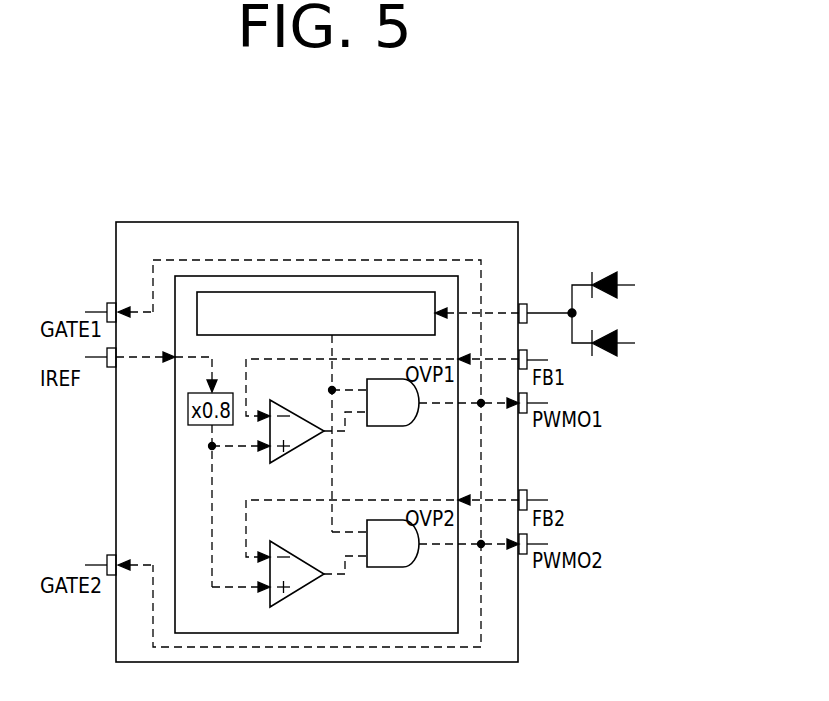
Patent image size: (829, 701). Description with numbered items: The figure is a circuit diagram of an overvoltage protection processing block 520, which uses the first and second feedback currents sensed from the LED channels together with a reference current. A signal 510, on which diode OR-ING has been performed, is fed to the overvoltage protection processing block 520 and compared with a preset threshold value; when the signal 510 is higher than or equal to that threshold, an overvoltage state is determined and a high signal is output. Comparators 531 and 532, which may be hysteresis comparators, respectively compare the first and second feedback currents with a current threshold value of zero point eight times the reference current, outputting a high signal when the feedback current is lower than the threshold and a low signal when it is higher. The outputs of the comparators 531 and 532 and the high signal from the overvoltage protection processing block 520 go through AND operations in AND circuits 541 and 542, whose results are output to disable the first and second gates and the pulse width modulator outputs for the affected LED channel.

The signal 510 is at (546, 310).
The OVP processing block 520 is at (361, 292).
The comparator 531 is at (298, 414).
The comparator 532 is at (298, 558).
The AND circuit 541 is at (390, 427).
The AND circuit 542 is at (390, 568).